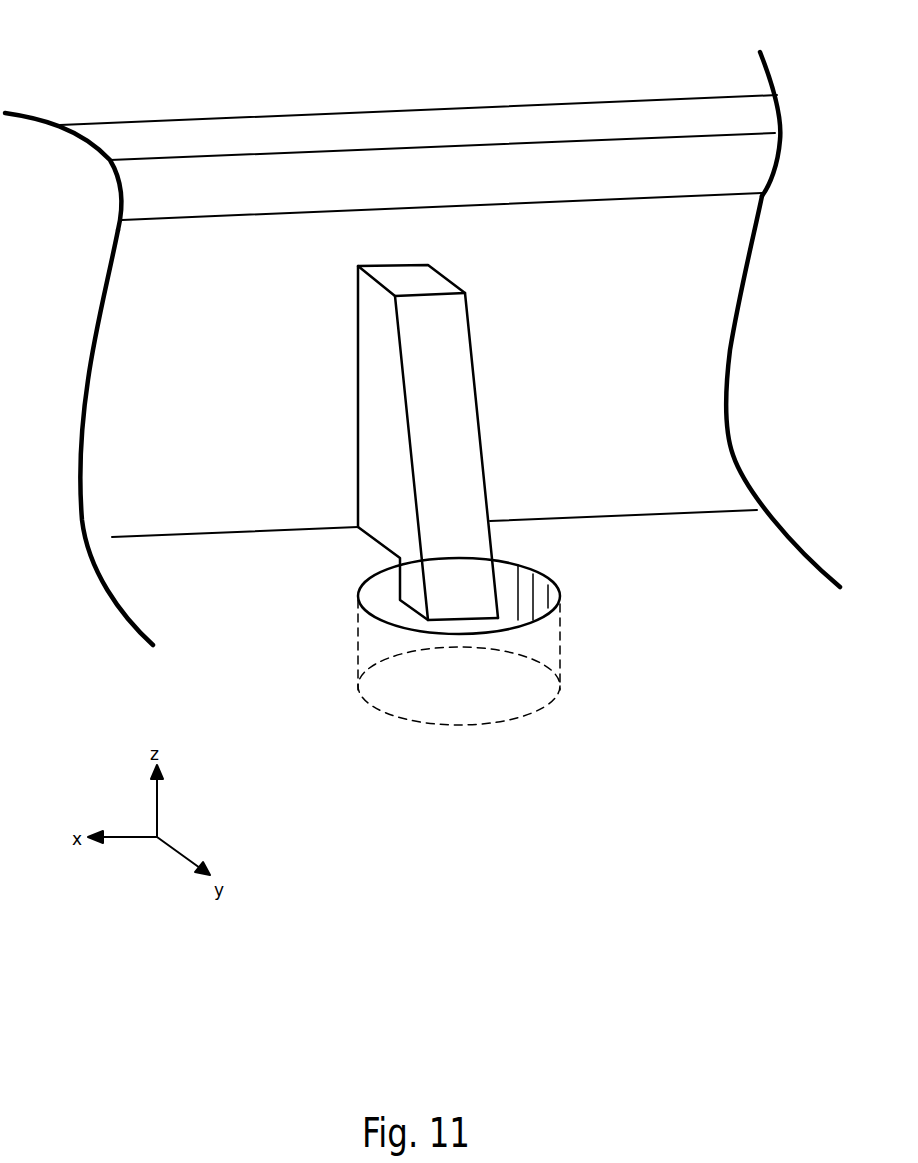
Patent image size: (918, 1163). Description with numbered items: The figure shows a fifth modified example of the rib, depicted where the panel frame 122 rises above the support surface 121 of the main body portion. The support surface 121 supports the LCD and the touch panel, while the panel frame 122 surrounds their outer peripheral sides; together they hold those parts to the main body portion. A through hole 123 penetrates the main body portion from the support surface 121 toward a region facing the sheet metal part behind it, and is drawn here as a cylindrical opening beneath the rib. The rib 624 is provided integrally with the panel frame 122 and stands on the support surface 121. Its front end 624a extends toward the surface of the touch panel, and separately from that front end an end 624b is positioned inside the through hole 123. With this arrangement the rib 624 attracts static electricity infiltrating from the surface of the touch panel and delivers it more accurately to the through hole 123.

The support surface 121 is at (180, 562).
The panel frame 122 is at (249, 133).
The through hole 123 is at (503, 571).
The rib 624 is at (354, 442).
The front end 624a is at (378, 300).
The end 624b is at (415, 593).